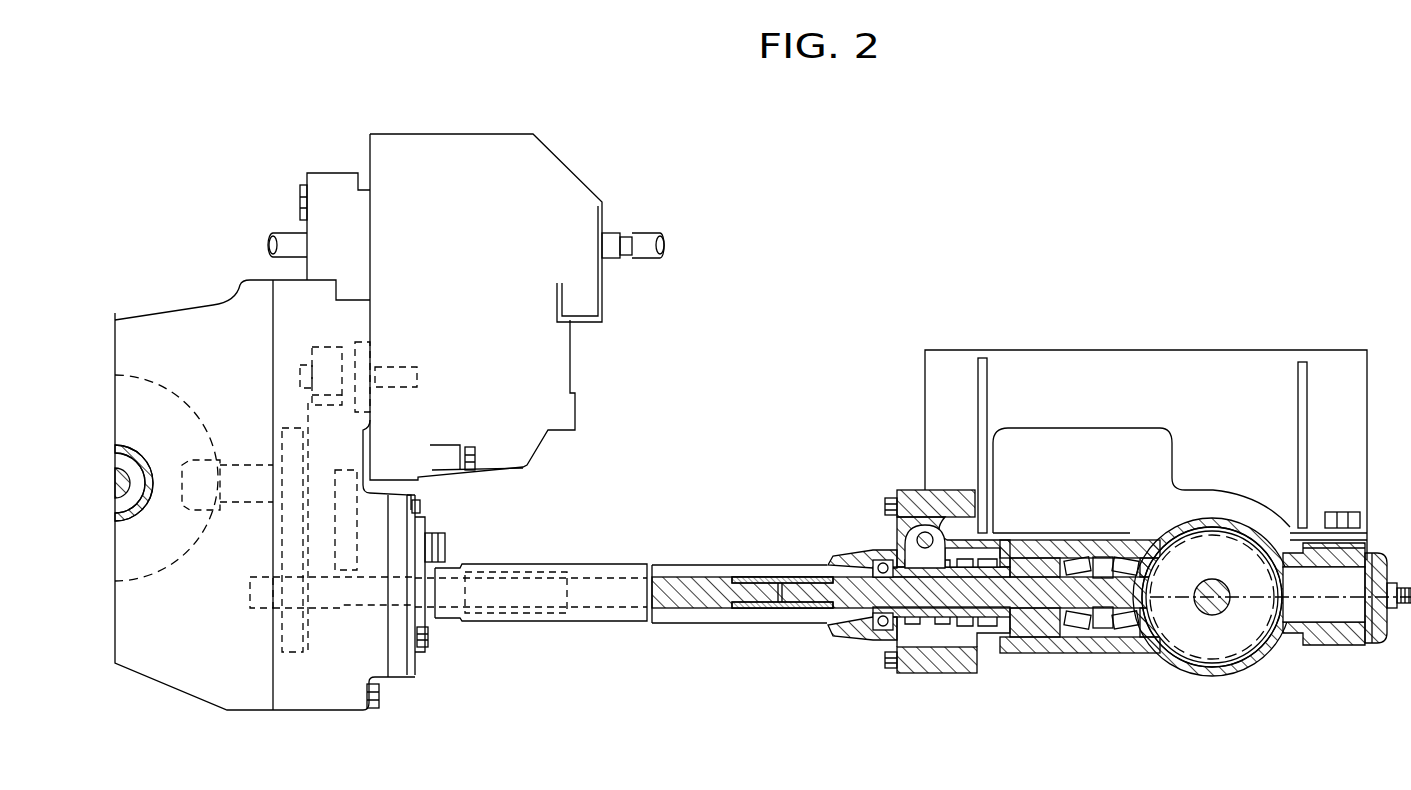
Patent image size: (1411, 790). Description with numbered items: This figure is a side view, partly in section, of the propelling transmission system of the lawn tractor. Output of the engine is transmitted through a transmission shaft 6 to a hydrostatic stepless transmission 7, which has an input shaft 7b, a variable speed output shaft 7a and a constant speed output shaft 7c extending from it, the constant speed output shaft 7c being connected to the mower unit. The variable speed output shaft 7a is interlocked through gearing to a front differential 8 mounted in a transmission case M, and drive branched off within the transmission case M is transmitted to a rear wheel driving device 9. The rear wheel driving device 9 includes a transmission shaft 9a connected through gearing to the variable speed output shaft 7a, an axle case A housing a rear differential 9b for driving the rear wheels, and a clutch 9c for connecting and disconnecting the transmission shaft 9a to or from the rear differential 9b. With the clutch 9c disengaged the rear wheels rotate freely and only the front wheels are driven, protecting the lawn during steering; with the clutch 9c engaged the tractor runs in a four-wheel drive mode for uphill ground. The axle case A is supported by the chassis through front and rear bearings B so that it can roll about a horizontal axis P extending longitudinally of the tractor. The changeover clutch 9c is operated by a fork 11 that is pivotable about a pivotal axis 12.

The transmission case M is at (280, 522).
The transmission shaft 6 is at (664, 240).
The hydrostatic stepless transmission 7 is at (552, 167).
The variable speed output shaft 7a is at (398, 362).
The input shaft 7b is at (627, 234).
The constant speed output shaft 7c is at (276, 240).
The front differential 8 is at (178, 398).
The rear wheel driving device 9 is at (806, 548).
The transmission shaft 9a is at (668, 600).
The rear differential 9b is at (1200, 660).
The clutch 9c is at (983, 631).
The fork 11 is at (908, 542).
The pivotal axis 12 is at (907, 494).
The axle case A is at (1243, 670).
The bearings B is at (1070, 654).
The horizontal axis P is at (1303, 600).